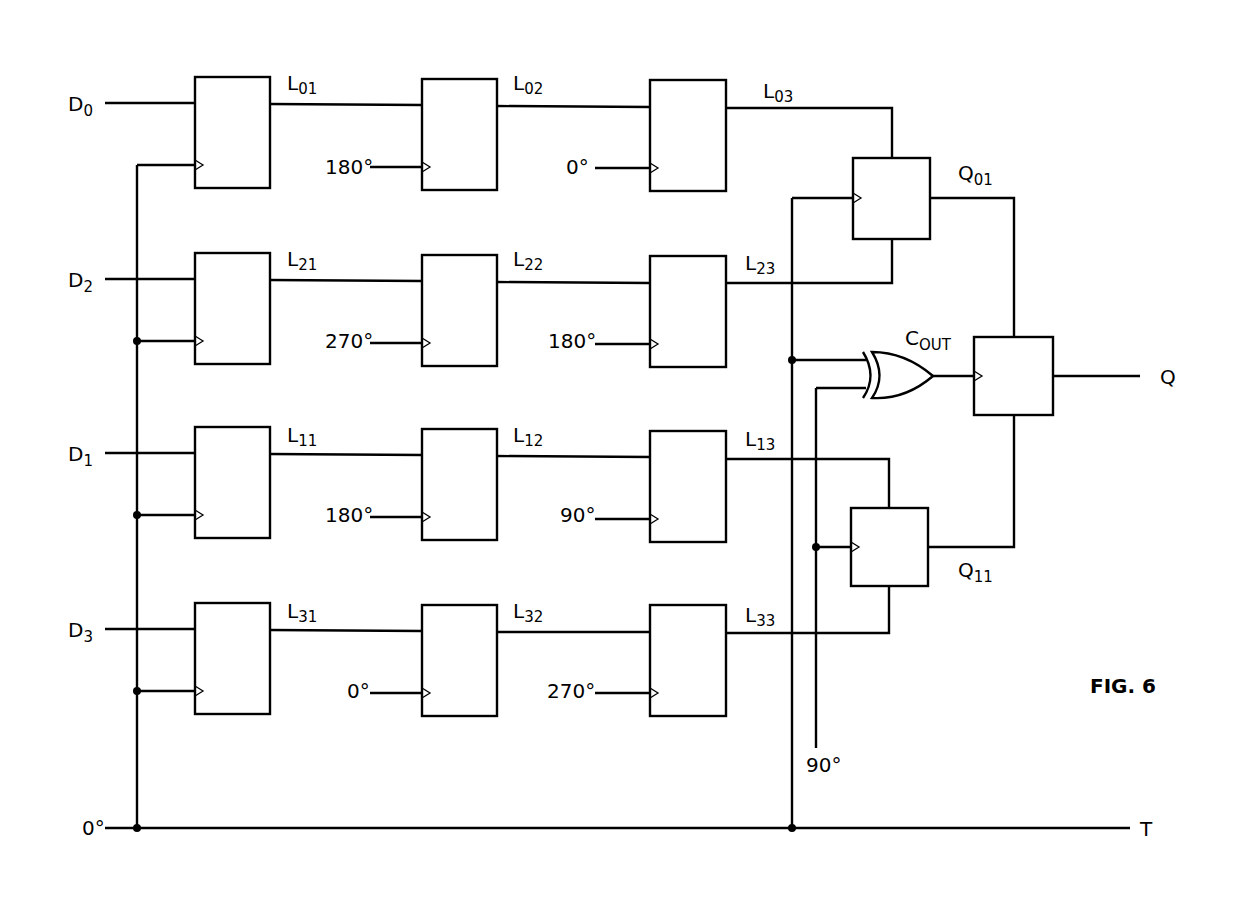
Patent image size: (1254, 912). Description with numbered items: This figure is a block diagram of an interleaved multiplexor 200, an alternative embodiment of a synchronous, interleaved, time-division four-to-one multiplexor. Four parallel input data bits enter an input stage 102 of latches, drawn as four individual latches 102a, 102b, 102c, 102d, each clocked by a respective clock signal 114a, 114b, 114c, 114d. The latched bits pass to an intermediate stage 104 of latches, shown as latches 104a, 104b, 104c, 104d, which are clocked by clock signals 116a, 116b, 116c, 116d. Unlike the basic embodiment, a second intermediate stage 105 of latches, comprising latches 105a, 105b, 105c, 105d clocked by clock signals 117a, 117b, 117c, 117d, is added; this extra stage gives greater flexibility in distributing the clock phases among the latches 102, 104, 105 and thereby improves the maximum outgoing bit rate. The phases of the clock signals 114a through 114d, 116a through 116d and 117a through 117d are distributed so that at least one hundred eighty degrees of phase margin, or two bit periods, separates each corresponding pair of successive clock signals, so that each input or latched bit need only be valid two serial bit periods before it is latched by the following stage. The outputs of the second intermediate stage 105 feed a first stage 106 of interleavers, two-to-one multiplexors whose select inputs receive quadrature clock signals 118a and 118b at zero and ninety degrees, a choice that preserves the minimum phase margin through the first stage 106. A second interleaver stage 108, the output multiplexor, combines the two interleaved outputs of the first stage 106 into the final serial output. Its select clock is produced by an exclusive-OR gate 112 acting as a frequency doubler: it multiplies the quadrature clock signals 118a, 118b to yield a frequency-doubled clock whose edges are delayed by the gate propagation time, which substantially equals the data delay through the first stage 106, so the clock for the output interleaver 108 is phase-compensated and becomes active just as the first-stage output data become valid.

The input stage of latches 102 is at (284, 62).
The D flip-flop 102a is at (223, 188).
The D flip-flop 102b is at (222, 538).
The D flip-flop 102c is at (225, 364).
The D flip-flop 102d is at (225, 714).
The intermediate stage of latches 104 is at (512, 62).
The D flip-flop 104a is at (450, 190).
The D flip-flop 104b is at (450, 540).
The D flip-flop 104c is at (455, 366).
The D flip-flop 104d is at (455, 716).
The second intermediate stage of latches 105 is at (746, 66).
The D flip-flop 105a is at (680, 191).
The D flip-flop 105b is at (678, 542).
The D flip-flop 105c is at (668, 367).
The D flip-flop 105d is at (680, 718).
The first stage of interleavers 106 is at (924, 110).
The second interleaver stage 108 is at (1075, 268).
The exclusive-OR gate 112 is at (887, 393).
The clock signal 114a is at (160, 166).
The clock signal 114b is at (160, 516).
The clock signal 114c is at (163, 342).
The clock signal 114d is at (163, 692).
The clock signal 116a is at (390, 168).
The clock signal 116b is at (390, 518).
The clock signal 116c is at (393, 344).
The clock signal 116d is at (390, 694).
The clock signal 117a is at (621, 168).
The clock signal 117b is at (620, 519).
The clock signal 117c is at (625, 344).
The clock signal 117d is at (621, 693).
The clock signal 118a is at (820, 196).
The clock signal 118b is at (838, 558).
The interleaved multiplexor 200 is at (985, 753).